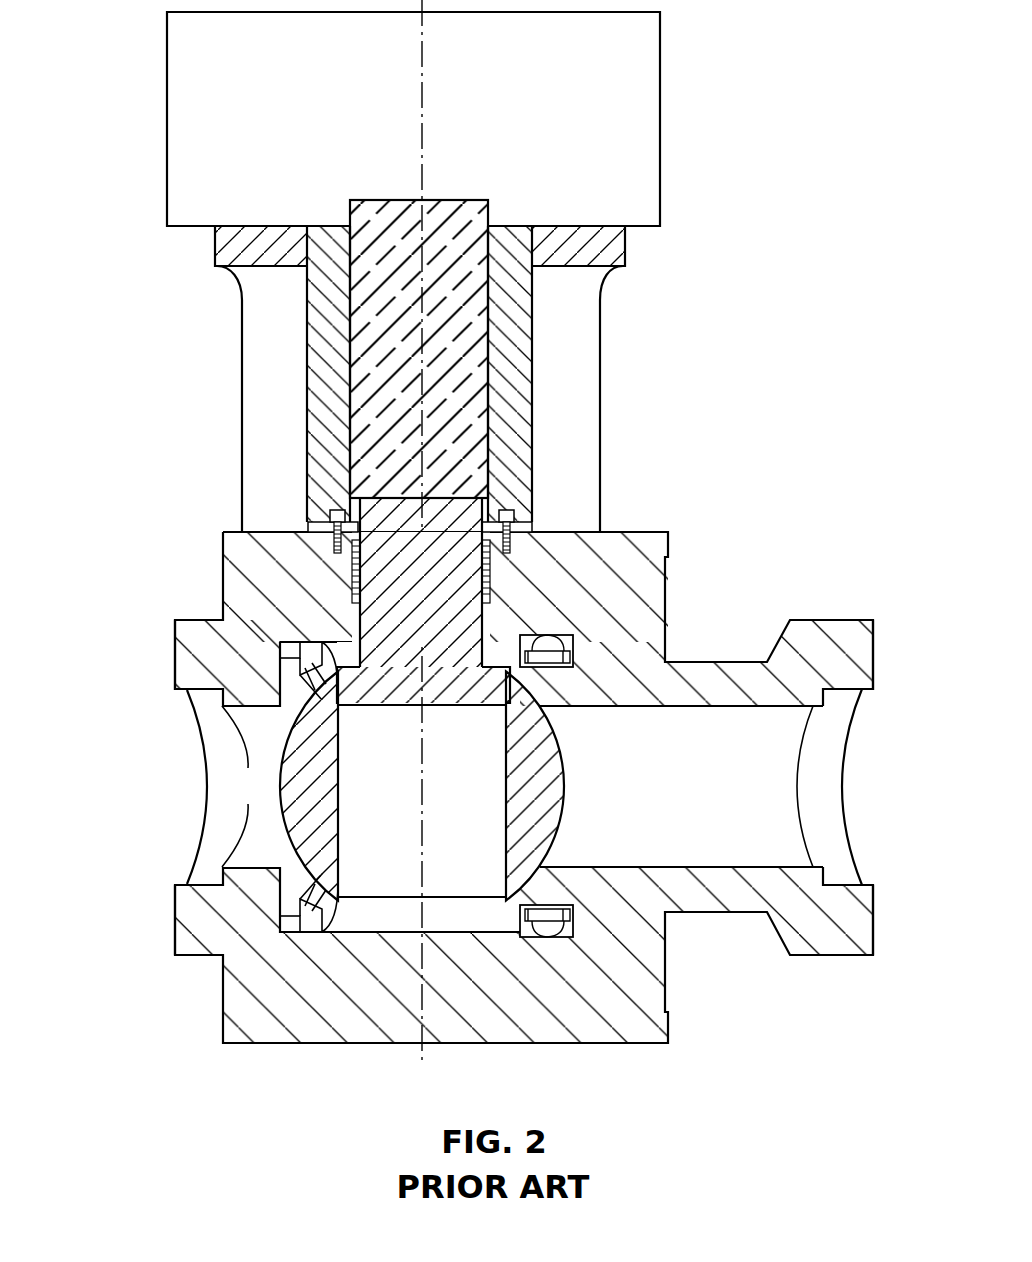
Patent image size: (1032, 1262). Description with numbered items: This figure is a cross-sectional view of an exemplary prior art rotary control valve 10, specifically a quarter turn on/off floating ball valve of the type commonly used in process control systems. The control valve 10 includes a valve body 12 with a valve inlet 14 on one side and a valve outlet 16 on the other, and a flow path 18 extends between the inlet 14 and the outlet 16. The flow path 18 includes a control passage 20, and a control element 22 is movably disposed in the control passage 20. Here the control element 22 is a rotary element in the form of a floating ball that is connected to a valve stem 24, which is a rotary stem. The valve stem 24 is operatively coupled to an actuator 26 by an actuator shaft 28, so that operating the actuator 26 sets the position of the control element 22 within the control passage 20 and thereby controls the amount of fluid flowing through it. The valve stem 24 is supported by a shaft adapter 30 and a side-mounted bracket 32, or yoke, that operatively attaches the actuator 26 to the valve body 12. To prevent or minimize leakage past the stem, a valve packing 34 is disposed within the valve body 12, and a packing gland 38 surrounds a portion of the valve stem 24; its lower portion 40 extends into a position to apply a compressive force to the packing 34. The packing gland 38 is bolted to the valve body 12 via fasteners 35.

The rotary control valve 10 is at (473, 532).
The valve body 12 is at (235, 590).
The valve inlet 14 is at (206, 806).
The valve outlet 16 is at (843, 790).
The flow path 18 is at (257, 797).
The control passage 20 is at (478, 840).
The control element 22 is at (325, 843).
The valve stem 24 is at (487, 625).
The actuator 26 is at (647, 90).
The actuator shaft 28 is at (470, 322).
The shaft adapter 30 is at (522, 472).
The side-mounted bracket 32 is at (575, 406).
The valve packing 34 is at (555, 537).
The fasteners 35 is at (330, 520).
The packing gland 38 is at (337, 514).
The lower portion 40 is at (320, 563).